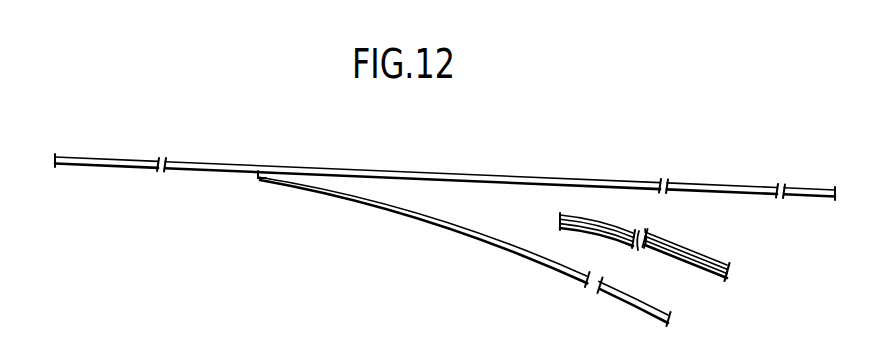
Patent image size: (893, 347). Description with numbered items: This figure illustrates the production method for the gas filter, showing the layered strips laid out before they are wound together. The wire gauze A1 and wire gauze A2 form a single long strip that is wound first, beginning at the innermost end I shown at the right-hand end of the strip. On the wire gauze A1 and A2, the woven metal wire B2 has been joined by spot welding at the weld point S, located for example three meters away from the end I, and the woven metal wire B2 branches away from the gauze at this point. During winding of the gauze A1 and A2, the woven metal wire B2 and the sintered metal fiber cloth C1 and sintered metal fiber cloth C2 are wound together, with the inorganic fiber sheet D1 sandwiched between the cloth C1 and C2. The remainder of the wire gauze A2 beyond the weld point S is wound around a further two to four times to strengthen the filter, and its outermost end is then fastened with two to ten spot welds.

The wire gauze A2 is at (63, 156).
The wire gauze A1 is at (801, 188).
The weld point S is at (265, 177).
The woven metal wire B2 is at (413, 219).
The sintered metal fiber cloth C1 is at (692, 250).
The sintered metal fiber cloth C2 is at (707, 268).
The inorganic fiber sheet D1 is at (730, 272).
The innermost end I is at (827, 233).